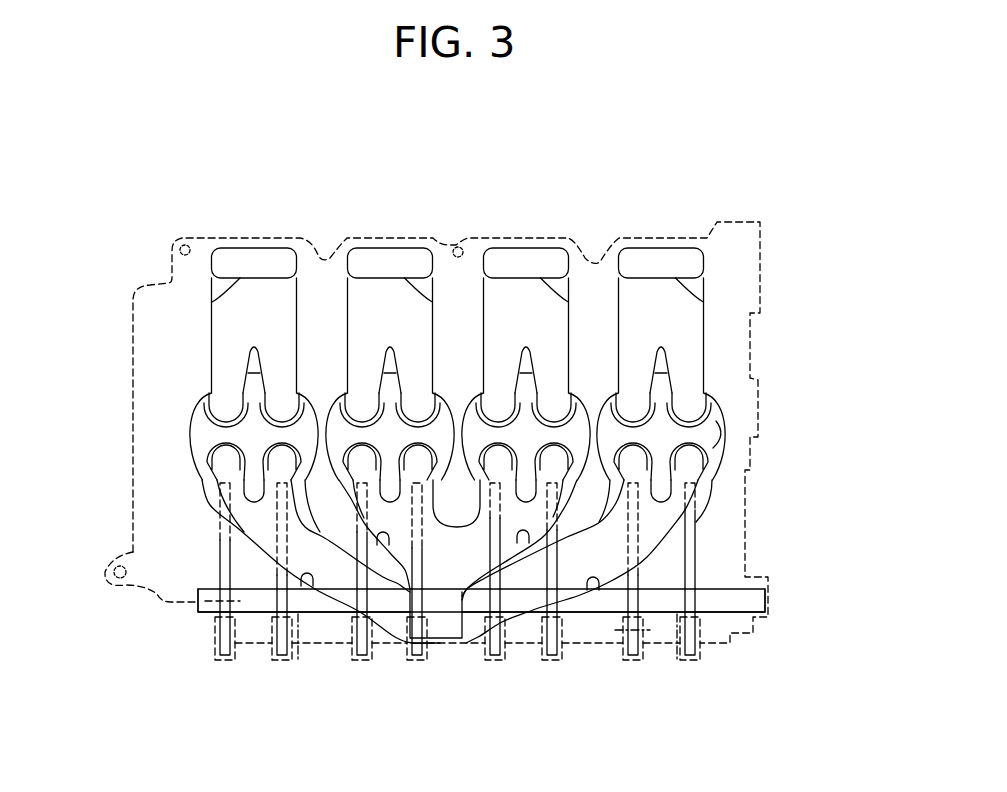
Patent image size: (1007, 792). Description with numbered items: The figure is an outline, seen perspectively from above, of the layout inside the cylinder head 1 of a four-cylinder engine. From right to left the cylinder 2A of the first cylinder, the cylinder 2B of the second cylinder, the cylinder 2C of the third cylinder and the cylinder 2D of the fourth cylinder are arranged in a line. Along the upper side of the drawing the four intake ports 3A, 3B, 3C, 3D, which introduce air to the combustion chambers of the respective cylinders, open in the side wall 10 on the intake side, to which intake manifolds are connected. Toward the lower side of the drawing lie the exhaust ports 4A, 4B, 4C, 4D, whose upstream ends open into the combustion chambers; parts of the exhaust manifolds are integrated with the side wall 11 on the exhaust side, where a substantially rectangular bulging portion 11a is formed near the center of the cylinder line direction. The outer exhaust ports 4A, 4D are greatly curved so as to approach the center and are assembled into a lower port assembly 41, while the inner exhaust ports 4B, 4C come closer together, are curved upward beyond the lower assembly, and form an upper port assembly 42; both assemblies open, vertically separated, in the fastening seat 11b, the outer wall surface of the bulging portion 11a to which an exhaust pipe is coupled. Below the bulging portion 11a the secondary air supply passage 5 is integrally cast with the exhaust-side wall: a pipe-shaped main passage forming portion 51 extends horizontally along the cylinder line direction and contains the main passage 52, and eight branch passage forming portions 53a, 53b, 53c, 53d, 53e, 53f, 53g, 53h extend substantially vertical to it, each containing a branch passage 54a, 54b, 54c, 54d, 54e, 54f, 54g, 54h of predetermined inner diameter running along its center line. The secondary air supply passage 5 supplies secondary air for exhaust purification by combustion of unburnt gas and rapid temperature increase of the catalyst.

The cylinder head 1 is at (142, 283).
The side wall on the intake side 10 is at (497, 236).
The cylinder of first cylinder #1 2A is at (717, 421).
The cylinder of second cylinder #2 2B is at (585, 460).
The cylinder of third cylinder #3 2C is at (330, 455).
The cylinder of fourth cylinder #4 2D is at (194, 423).
The intake port 3A is at (673, 279).
The intake port 3B is at (538, 279).
The intake port 3C is at (405, 279).
The intake port 3D is at (240, 279).
The exhaust port 4A is at (591, 586).
The exhaust port 4B is at (519, 539).
The exhaust port 4C is at (389, 541).
The exhaust port 4D is at (313, 582).
The secondary air supply passage 5 is at (758, 587).
The lower port assembly 41 is at (437, 622).
The upper port assembly 42 is at (432, 646).
The main passage forming portion 51 is at (198, 614).
The main passage 52 is at (708, 640).
The side wall on the exhaust side 11 is at (196, 611).
The bulging portion 11a is at (634, 622).
The fastening seat 11b is at (297, 646).
The branch passage forming portion 53a is at (692, 663).
The branch passage forming portion 53b is at (626, 663).
The branch passage forming portion 53c is at (554, 663).
The branch passage forming portion 53d is at (491, 663).
The branch passage forming portion 53e is at (412, 663).
The branch passage forming portion 53f is at (357, 663).
The branch passage forming portion 53g is at (271, 657).
The branch passage forming portion 53h is at (214, 657).
The branch passage 54a is at (692, 532).
The branch passage 54b is at (640, 577).
The branch passage 54c is at (554, 530).
The branch passage 54d is at (493, 521).
The branch passage 54e is at (415, 549).
The branch passage 54f is at (358, 532).
The branch passage 54g is at (277, 583).
The branch passage 54h is at (220, 541).